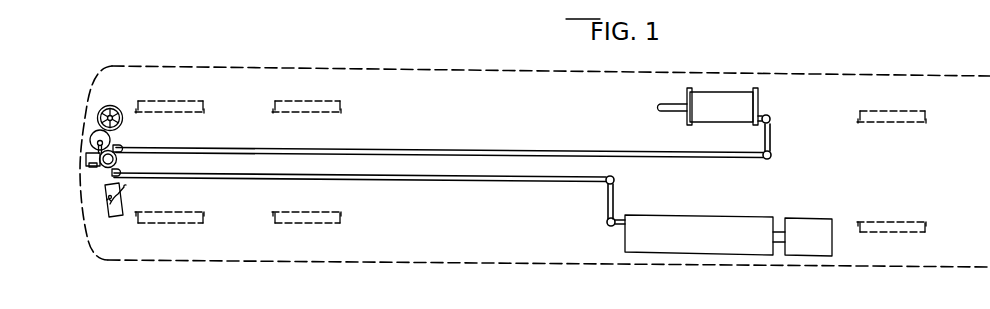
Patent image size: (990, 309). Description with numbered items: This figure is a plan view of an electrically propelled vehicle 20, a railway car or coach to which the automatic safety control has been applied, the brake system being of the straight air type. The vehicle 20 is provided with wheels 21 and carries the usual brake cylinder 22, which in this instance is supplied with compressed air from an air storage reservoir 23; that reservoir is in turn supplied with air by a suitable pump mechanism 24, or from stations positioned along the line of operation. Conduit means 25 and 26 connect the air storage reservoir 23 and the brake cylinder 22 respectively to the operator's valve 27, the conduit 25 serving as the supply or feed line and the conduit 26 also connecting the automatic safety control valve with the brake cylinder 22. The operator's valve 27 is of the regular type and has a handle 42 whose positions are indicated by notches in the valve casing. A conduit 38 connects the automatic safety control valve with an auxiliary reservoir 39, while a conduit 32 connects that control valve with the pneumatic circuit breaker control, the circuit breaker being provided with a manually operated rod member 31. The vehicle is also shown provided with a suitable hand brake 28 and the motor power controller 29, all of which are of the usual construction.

The electrically propelled vehicle 20 is at (780, 265).
The wheels 21 is at (303, 223).
The brake cylinder 22 is at (737, 92).
The air storage reservoir 23 is at (725, 248).
The pump mechanism 24 is at (823, 250).
The conduit means 25 is at (477, 180).
The conduit means 26 is at (538, 155).
The operator's valve 27 is at (107, 167).
The hand brake 28 is at (100, 110).
The motor power controller 29 is at (110, 217).
The manually operated rod member 31 is at (108, 301).
The conduit 32 is at (96, 164).
The conduit 38 is at (87, 149).
The auxiliary reservoir 39 is at (92, 135).
The handle 42 is at (123, 152).